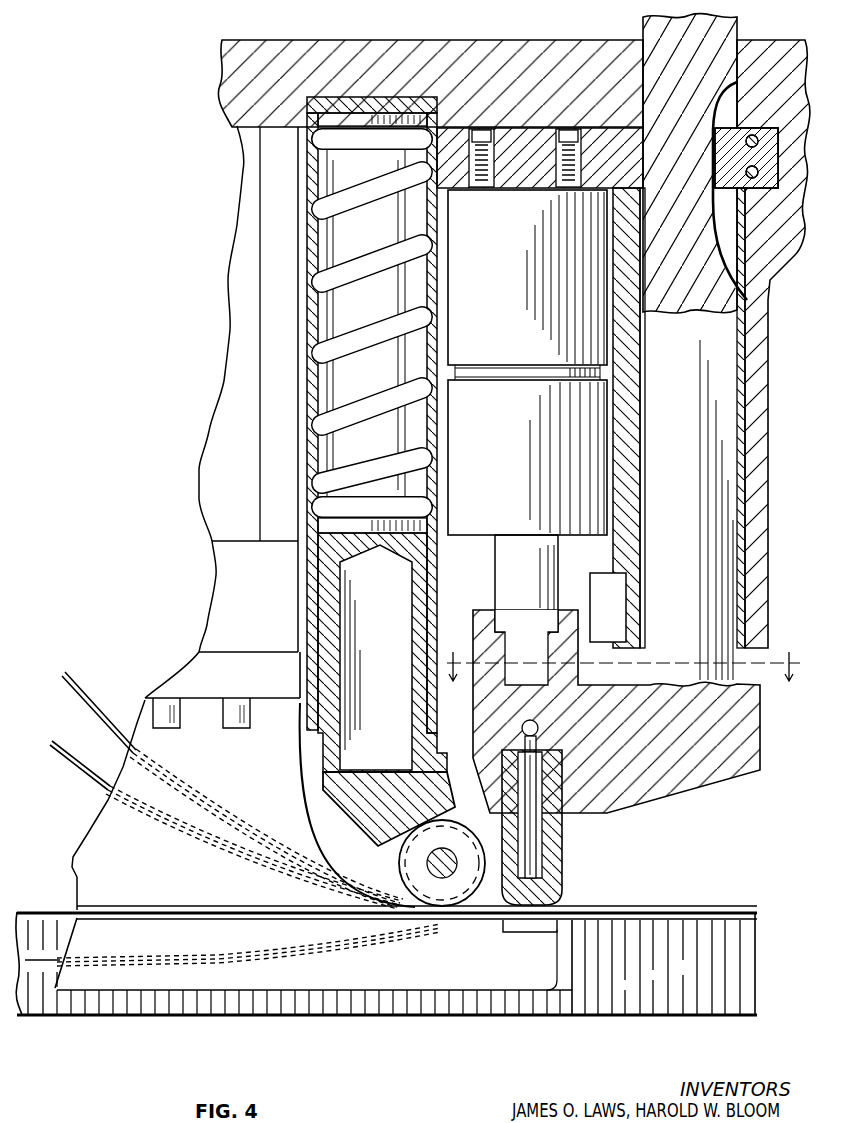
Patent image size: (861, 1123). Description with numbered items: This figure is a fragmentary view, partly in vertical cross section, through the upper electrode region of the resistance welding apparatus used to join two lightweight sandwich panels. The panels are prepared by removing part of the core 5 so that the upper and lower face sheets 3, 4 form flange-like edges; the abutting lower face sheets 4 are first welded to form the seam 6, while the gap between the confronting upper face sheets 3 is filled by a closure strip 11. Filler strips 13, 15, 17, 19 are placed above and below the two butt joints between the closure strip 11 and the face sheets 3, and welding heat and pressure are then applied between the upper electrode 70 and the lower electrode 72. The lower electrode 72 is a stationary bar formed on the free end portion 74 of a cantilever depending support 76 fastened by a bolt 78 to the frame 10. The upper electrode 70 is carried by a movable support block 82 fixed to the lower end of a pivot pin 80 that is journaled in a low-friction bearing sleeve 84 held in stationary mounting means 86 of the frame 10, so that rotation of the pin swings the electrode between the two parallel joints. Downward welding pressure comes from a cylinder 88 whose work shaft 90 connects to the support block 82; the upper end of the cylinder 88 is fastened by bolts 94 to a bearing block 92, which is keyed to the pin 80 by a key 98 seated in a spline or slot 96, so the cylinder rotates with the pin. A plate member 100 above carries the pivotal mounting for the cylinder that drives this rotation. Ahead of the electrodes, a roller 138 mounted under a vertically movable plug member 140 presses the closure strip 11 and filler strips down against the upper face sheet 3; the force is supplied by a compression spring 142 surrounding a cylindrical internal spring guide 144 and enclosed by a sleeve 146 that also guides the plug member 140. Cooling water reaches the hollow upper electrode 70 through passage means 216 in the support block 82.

The upper face sheet 3 is at (693, 912).
The lower face sheet 4 is at (712, 1018).
The core 5 is at (758, 965).
The seam 6 is at (461, 704).
The frame 10 is at (243, 562).
The closure strip 11 is at (56, 752).
The filler strip 13 is at (232, 778).
The filler strip 15 is at (78, 690).
The filler strip 17 is at (248, 952).
The filler strip 19 is at (330, 957).
The upper electrode 70 is at (548, 882).
The lower electrode 72 is at (540, 924).
The end portion 74 is at (545, 977).
The depending support 76 is at (243, 985).
The bolt 78 is at (237, 722).
The pivot pin 80 is at (730, 35).
The movable support block 82 is at (602, 810).
The bearing sleeve 84 is at (745, 555).
The stationary mounting means 86 is at (758, 432).
The cylinder 88 is at (527, 362).
The work shaft 90 is at (500, 563).
The bearing block 92 is at (532, 112).
The bolts 94 is at (566, 178).
The spline or slot 96 is at (725, 105).
The key 98 is at (762, 268).
The plate member 100 is at (440, 45).
The roller 138 is at (420, 860).
The plug member 140 is at (330, 748).
The compression spring 142 is at (343, 345).
The internal spring guide 144 is at (366, 325).
The sleeve 146 is at (312, 225).
The passage means 216 is at (538, 724).